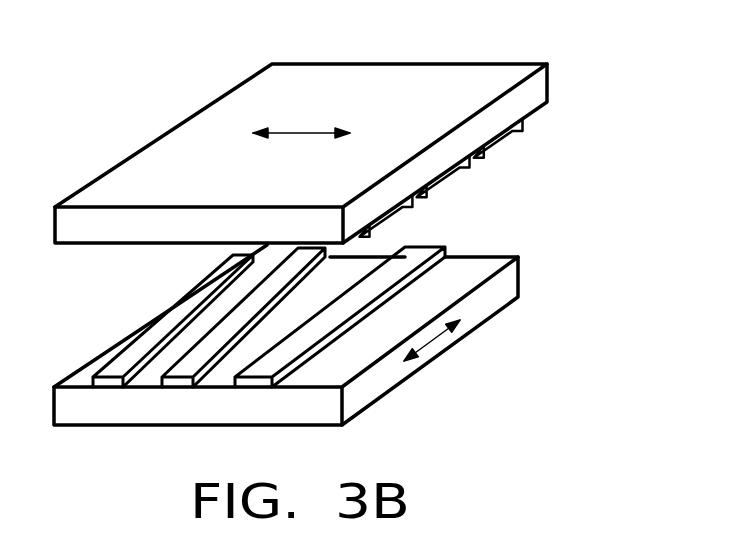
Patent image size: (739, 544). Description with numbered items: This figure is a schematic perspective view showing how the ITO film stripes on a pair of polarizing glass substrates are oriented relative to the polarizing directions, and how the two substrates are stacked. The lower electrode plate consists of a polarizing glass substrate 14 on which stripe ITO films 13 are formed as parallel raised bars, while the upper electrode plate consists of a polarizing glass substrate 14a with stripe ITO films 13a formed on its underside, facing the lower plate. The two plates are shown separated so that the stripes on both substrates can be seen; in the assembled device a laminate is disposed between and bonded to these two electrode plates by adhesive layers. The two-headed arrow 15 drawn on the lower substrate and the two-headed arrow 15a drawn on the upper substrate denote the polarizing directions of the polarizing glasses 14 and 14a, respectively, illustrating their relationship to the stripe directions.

The polarizing glass substrate 14a is at (507, 73).
The stripe ITO films 13a is at (504, 141).
The two-headed arrow 15a is at (299, 130).
The polarizing glass substrate 14 is at (511, 282).
The stripe ITO films 13 is at (433, 250).
The two-headed arrow 15 is at (432, 344).